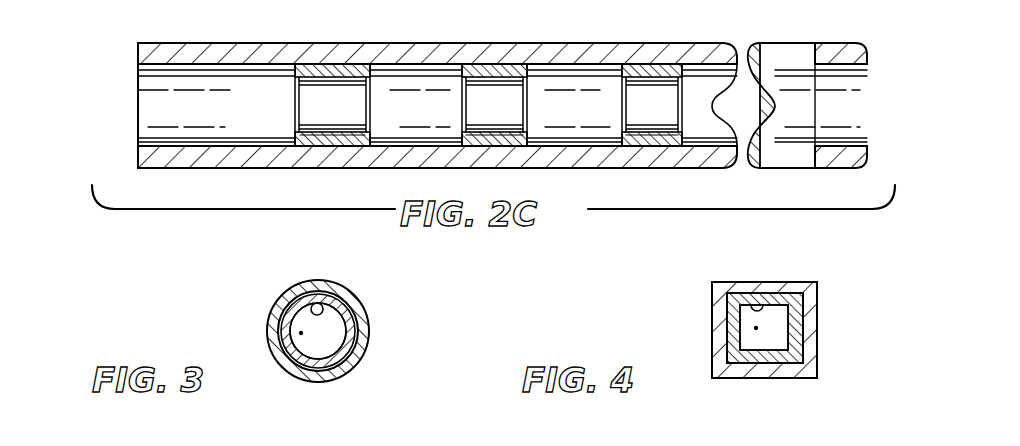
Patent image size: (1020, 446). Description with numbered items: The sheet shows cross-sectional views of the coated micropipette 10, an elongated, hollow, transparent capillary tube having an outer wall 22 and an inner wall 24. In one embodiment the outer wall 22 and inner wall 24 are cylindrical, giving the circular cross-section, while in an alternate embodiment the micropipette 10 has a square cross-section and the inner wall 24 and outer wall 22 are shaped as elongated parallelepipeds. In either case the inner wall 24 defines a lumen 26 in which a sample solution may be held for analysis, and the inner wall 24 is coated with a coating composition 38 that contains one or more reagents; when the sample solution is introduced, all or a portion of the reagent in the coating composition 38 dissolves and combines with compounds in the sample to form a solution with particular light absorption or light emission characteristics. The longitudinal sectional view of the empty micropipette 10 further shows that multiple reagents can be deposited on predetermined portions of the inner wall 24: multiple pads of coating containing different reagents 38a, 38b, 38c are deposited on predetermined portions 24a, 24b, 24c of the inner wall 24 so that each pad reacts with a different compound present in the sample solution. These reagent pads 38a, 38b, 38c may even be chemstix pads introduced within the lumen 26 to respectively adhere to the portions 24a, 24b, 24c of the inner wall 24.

In FIG. 3, the micropipette 10 is at (250, 292).
In FIG. 2C, the outer wall 22 is at (571, 52).
In FIG. 3, the outer wall 22 is at (362, 337).
In FIG. 4, the outer wall 22 is at (805, 336).
In FIG. 2C, the inner wall 24 is at (186, 57).
In FIG. 3, the inner wall 24 is at (341, 292).
In FIG. 4, the inner wall 24 is at (808, 300).
In FIG. 2C, the predetermined portion of inner wall 24a is at (334, 60).
In FIG. 2C, the predetermined portion of inner wall 24b is at (486, 62).
In FIG. 2C, the predetermined portion of inner wall 24c is at (652, 60).
In FIG. 2C, the lumen 26 is at (236, 91).
In FIG. 3, the lumen 26 is at (300, 333).
In FIG. 4, the lumen 26 is at (754, 328).
In FIG. 3, the coating composition 38 is at (317, 302).
In FIG. 4, the coating composition 38 is at (758, 303).
In FIG. 2C, the reagent pad 38a is at (330, 142).
In FIG. 2C, the reagent pad 38b is at (495, 142).
In FIG. 2C, the reagent pad 38c is at (660, 142).